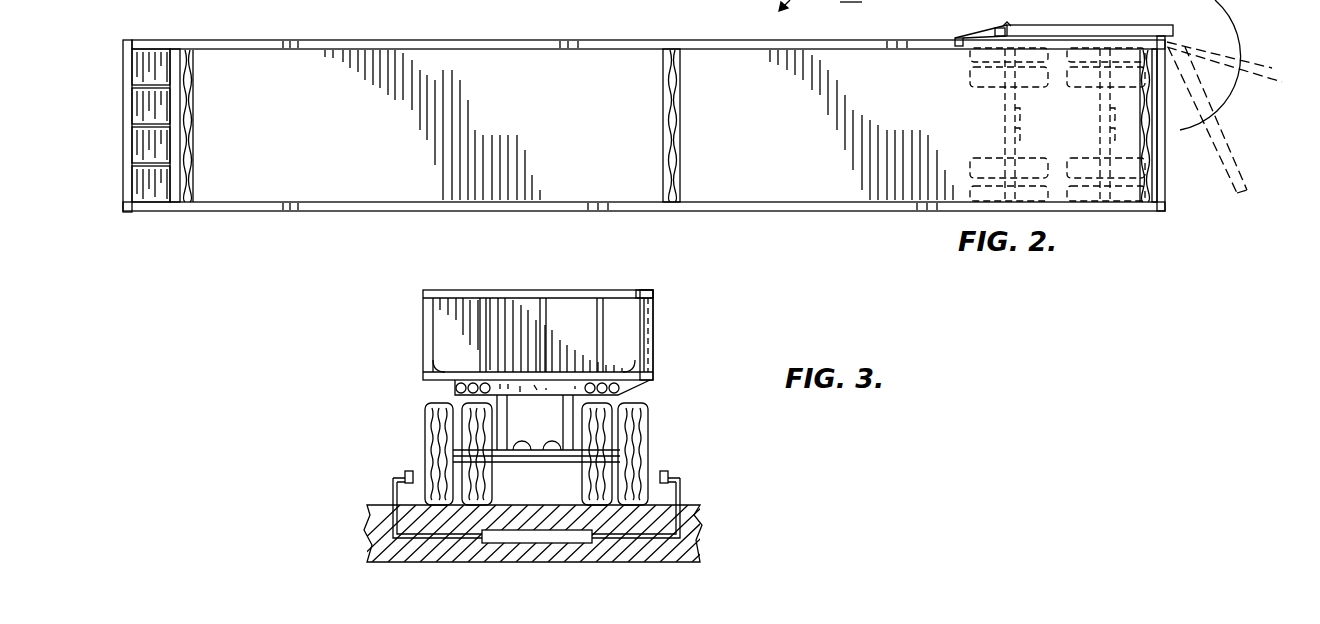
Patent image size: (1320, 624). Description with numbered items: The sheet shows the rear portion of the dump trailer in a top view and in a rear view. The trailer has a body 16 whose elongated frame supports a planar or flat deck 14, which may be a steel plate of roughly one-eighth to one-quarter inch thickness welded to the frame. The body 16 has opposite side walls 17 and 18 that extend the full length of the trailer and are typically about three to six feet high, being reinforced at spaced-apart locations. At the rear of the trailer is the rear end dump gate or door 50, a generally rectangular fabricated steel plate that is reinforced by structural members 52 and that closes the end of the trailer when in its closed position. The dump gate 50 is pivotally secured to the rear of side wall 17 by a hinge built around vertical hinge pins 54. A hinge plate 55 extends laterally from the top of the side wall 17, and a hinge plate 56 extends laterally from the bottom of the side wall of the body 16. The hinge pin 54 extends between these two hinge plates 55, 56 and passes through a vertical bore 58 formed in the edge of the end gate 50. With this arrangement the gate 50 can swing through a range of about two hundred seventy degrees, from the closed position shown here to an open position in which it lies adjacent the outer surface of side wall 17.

In FIG. 2, the deck 14 is at (644, 125).
In FIG. 3, the body 16 is at (650, 290).
In FIG. 2, the side wall 17 is at (408, 40).
In FIG. 2, the side wall 18 is at (362, 211).
In FIG. 2, the rear end dump gate 50 is at (1166, 150).
In FIG. 3, the rear end dump gate 50 is at (472, 353).
In FIG. 3, the structural members 52 is at (590, 312).
In FIG. 3, the hinge pin 54 is at (653, 312).
In FIG. 3, the hinge plate 55 is at (643, 290).
In FIG. 3, the hinge plate 56 is at (648, 383).
In FIG. 3, the vertical bore 58 is at (655, 340).